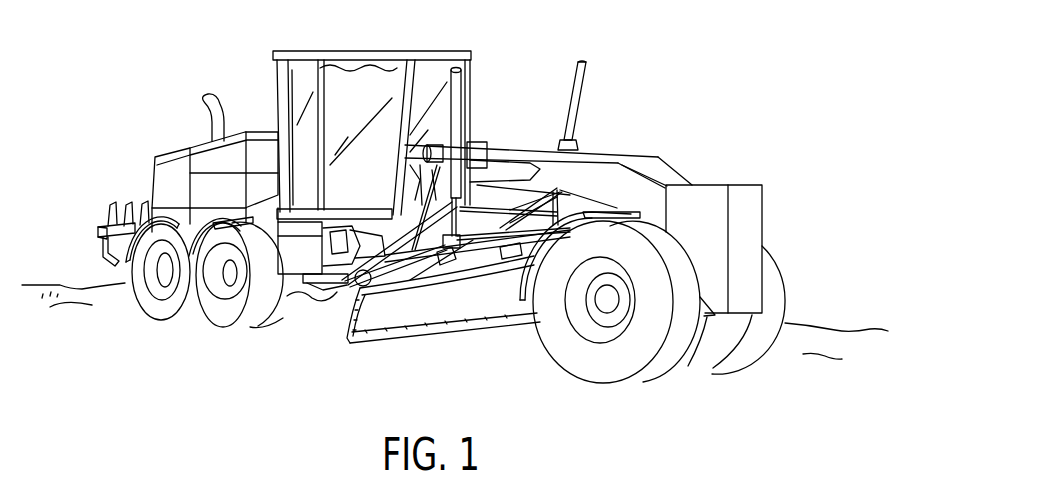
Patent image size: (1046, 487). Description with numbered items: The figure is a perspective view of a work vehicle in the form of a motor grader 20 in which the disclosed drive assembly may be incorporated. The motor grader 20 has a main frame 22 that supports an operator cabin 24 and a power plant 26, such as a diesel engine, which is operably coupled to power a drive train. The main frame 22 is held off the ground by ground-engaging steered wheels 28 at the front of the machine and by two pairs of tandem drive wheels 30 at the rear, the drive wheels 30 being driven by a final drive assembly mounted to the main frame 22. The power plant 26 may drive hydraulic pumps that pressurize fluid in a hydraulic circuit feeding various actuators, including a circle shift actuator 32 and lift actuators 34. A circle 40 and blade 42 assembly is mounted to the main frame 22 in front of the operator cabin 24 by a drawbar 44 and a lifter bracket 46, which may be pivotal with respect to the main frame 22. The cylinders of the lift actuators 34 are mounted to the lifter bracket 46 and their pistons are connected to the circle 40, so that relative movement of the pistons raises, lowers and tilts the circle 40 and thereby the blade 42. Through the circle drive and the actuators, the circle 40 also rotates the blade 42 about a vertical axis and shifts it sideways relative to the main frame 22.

The motor grader 20 is at (648, 96).
The main frame 22 is at (683, 170).
The operator cabin 24 is at (350, 72).
The power plant 26 is at (172, 178).
The ground-engaging steered wheels 28 is at (708, 317).
The tandem drive wheels 30 is at (217, 284).
The circle shift actuator 32 is at (518, 220).
The lift actuators 34 is at (578, 94).
The circle 40 is at (488, 262).
The blade 42 is at (342, 322).
The drawbar 44 is at (508, 258).
The lifter bracket 46 is at (476, 134).